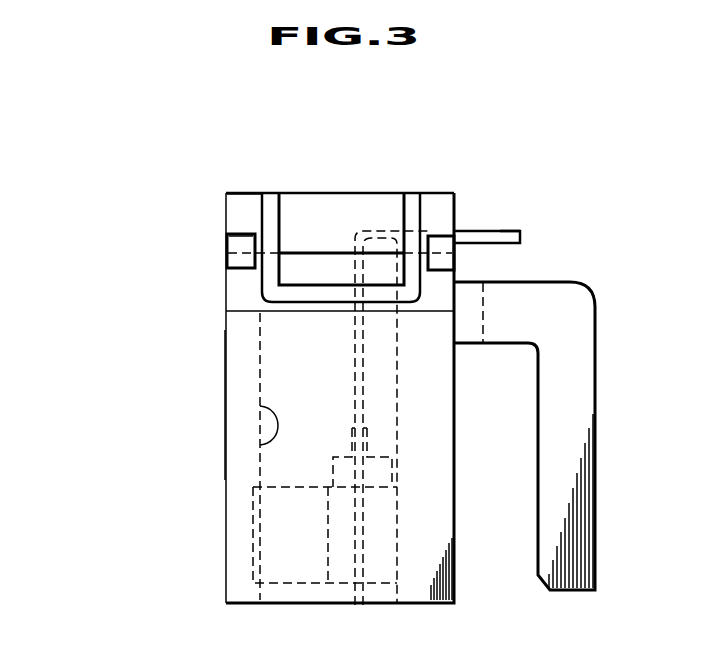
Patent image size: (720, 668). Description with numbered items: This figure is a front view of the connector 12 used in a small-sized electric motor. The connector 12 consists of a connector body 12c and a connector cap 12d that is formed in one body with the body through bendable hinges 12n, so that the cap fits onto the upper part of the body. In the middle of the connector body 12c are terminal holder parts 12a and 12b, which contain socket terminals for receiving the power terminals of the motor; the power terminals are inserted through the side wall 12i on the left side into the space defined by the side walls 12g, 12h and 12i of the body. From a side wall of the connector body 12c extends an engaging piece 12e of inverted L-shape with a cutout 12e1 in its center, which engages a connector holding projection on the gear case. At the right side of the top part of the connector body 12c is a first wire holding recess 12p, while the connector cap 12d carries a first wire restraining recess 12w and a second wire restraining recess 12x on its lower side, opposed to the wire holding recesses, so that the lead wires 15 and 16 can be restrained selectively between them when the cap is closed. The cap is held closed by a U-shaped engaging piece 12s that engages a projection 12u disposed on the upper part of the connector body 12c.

The connector 12 is at (378, 194).
The connector cap 12d is at (243, 198).
The projection 12u is at (318, 258).
The U-shaped engaging piece 12s is at (293, 293).
The hinges 12n is at (226, 240).
The second wire restraining recess 12x is at (237, 243).
The side wall 12g is at (226, 254).
The first wire holding recess 12p is at (457, 258).
The side wall 12h is at (405, 425).
The connector body 12c is at (232, 520).
The terminal holder part 12b is at (141, 456).
The terminal holder part 12a is at (260, 445).
The side wall 12i is at (226, 383).
The lead wire 15 is at (513, 188).
The lead wire 16 is at (498, 230).
The first wire restraining recess 12w is at (520, 242).
The engaging piece 12e is at (597, 403).
The cutout 12e1 is at (483, 317).